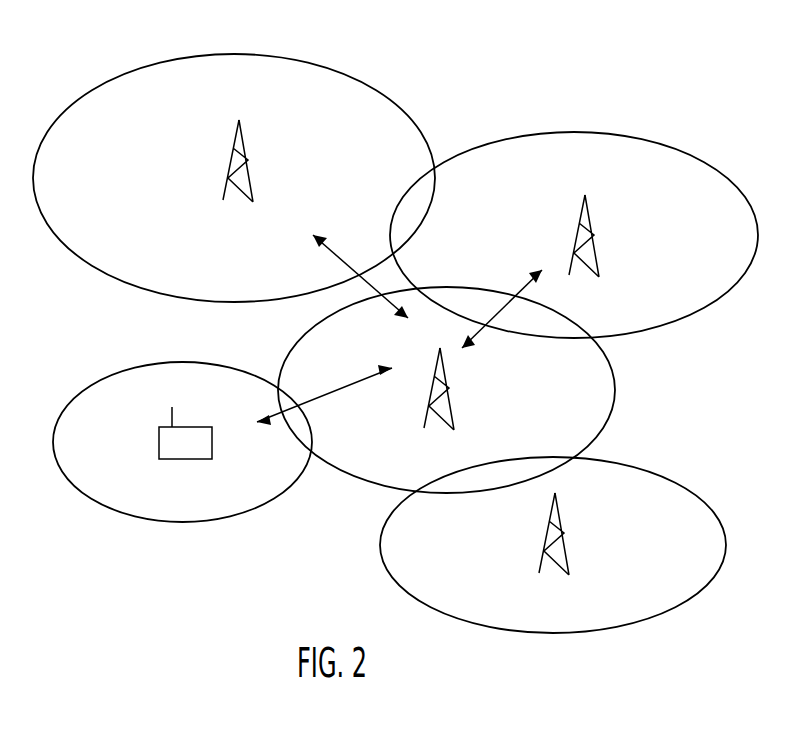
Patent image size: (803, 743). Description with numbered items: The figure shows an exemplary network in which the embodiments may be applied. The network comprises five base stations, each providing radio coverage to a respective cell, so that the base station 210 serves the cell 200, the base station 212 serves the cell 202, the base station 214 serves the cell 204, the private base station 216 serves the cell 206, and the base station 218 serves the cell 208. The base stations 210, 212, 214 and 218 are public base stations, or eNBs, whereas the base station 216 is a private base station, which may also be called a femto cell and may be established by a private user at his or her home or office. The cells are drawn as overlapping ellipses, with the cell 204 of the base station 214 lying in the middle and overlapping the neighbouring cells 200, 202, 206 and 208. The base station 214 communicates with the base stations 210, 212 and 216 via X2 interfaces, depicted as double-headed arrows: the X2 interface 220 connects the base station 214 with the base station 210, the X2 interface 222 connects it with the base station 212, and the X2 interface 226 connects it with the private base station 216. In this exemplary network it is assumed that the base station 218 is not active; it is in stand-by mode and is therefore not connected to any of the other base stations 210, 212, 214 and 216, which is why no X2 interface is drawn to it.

The cell 200 is at (387, 98).
The cell 202 is at (665, 143).
The cell 204 is at (614, 390).
The cell 206 is at (192, 361).
The cell 208 is at (680, 478).
The base station 210 is at (248, 158).
The base station 212 is at (594, 233).
The base station 214 is at (449, 386).
The private base station 216 is at (212, 441).
The base station 218 is at (564, 531).
The X2 interface 220 is at (340, 266).
The X2 interface 222 is at (522, 284).
The X2 interface 226 is at (372, 377).